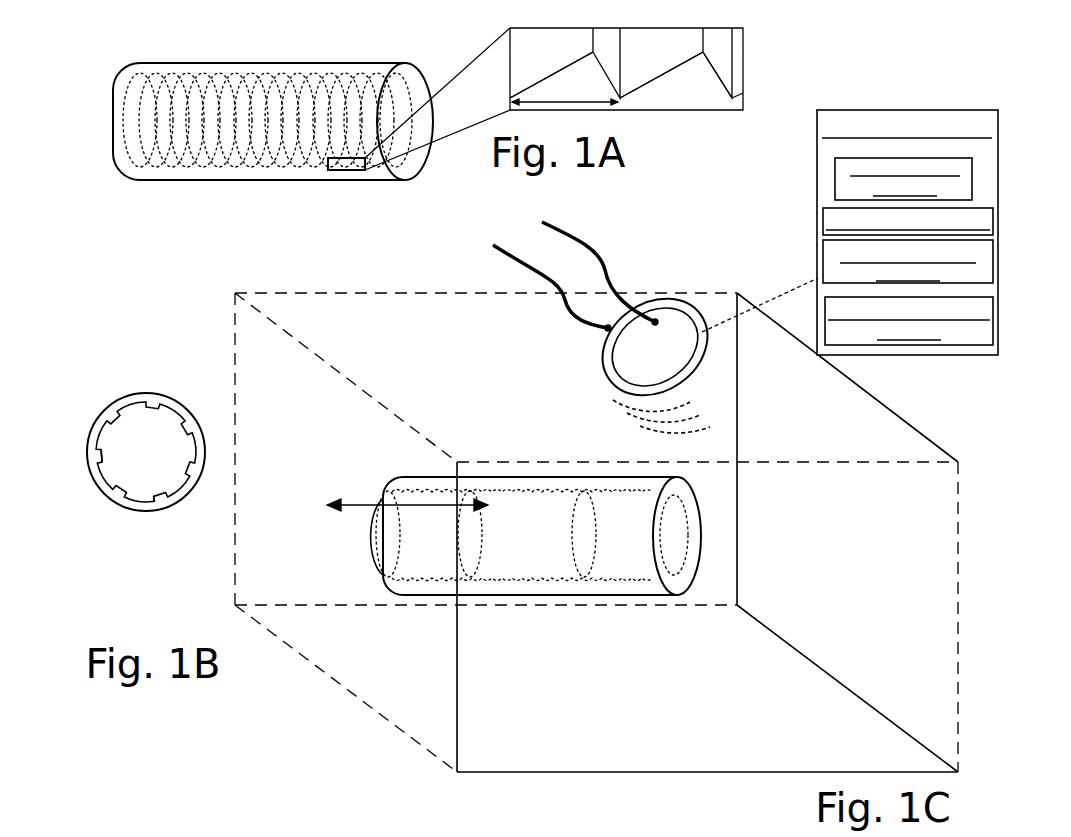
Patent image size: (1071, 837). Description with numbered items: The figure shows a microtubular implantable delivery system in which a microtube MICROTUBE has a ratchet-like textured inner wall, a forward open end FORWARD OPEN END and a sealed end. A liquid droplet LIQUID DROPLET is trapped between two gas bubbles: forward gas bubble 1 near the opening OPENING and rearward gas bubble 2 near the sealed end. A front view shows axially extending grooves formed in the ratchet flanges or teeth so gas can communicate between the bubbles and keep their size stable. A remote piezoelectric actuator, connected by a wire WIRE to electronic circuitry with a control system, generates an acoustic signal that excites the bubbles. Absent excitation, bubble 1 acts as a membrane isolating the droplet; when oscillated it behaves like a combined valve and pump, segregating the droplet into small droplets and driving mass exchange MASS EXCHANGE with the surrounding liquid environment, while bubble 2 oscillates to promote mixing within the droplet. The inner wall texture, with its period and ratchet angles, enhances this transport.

In FIG. 1C, the forward gas bubble 1 is at (424, 571).
In FIG. 1C, the rearward gas bubble 2 is at (629, 572).
In FIG. 1A, the microtube MICROTUBE is at (295, 180).
In FIG. 1B, the microtube MICROTUBE is at (128, 393).
In FIG. 1C, the microtube MICROTUBE is at (540, 597).
In FIG. 1B, the tube opening OPENING is at (163, 500).
In FIG. 1C, the forward open end FORWARD OPEN END is at (388, 500).
In FIG. 1C, the liquid droplet LIQUID DROPLET is at (566, 558).
In FIG. 1C, the mass exchange MASS EXCHANGE is at (367, 511).
In FIG. 1C, the wire WIRE is at (545, 266).